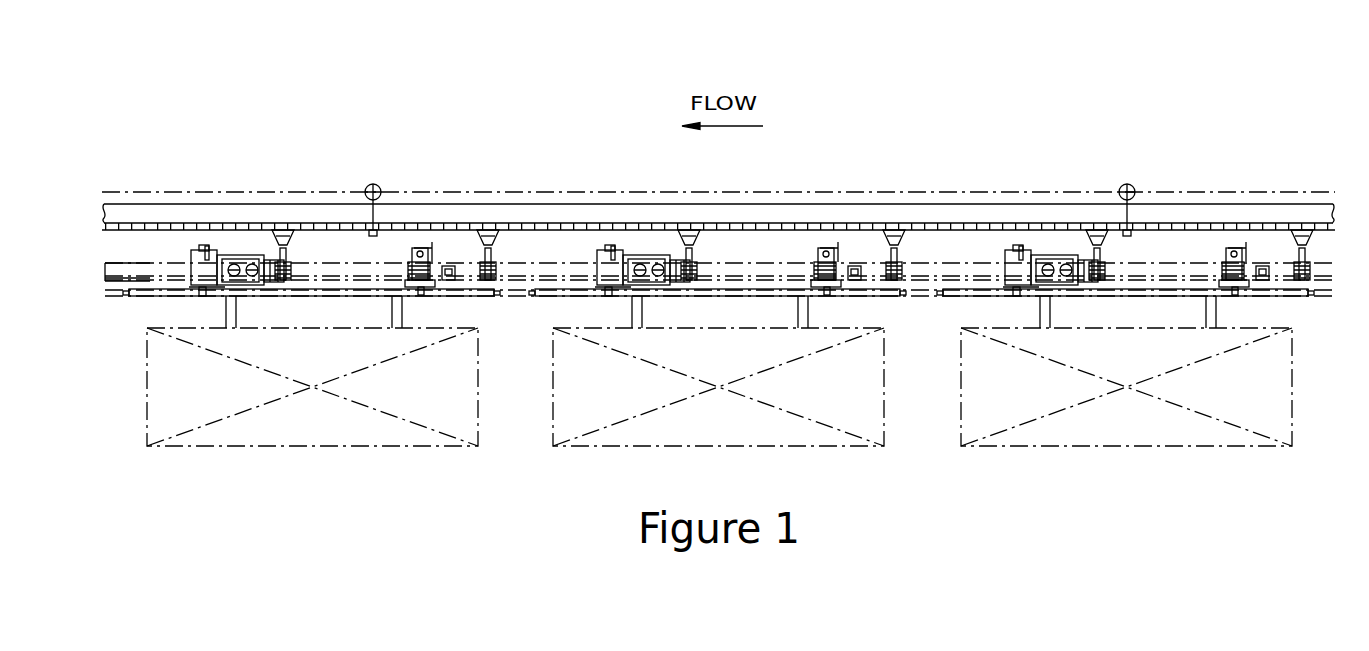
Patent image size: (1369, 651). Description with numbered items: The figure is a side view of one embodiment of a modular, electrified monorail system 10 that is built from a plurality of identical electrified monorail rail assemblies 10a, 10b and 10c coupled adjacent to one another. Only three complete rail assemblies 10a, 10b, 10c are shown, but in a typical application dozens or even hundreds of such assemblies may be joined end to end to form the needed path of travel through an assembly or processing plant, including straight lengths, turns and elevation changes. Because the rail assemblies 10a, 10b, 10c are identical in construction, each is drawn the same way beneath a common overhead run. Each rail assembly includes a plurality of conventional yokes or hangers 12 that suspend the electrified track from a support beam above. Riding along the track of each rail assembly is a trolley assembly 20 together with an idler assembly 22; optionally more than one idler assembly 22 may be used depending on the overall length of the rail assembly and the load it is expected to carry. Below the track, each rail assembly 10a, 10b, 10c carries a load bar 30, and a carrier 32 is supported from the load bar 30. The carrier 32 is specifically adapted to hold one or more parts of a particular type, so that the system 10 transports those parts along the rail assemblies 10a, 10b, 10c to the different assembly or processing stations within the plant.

The modular electrified monorail system 10 is at (918, 100).
The rail assembly 10a is at (995, 262).
The rail assembly 10b is at (585, 262).
The rail assembly 10c is at (138, 262).
The hangers 12 is at (287, 253).
The trolley assembly 20 is at (203, 245).
The idler assembly 22 is at (416, 244).
The load bar 30 is at (147, 298).
The carrier 32 is at (313, 446).